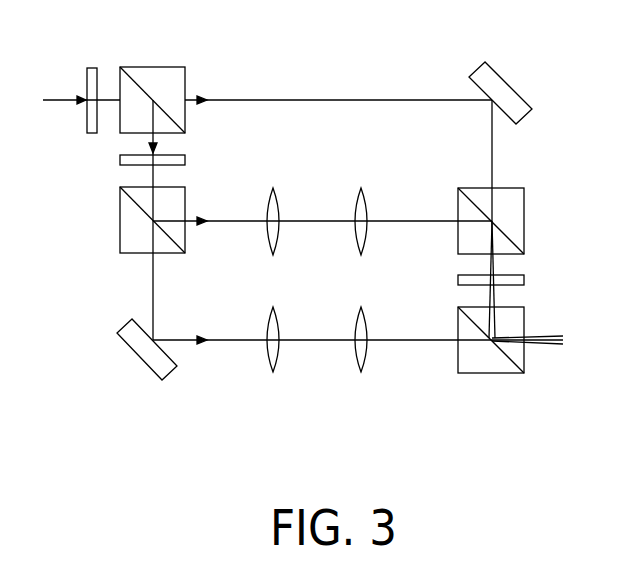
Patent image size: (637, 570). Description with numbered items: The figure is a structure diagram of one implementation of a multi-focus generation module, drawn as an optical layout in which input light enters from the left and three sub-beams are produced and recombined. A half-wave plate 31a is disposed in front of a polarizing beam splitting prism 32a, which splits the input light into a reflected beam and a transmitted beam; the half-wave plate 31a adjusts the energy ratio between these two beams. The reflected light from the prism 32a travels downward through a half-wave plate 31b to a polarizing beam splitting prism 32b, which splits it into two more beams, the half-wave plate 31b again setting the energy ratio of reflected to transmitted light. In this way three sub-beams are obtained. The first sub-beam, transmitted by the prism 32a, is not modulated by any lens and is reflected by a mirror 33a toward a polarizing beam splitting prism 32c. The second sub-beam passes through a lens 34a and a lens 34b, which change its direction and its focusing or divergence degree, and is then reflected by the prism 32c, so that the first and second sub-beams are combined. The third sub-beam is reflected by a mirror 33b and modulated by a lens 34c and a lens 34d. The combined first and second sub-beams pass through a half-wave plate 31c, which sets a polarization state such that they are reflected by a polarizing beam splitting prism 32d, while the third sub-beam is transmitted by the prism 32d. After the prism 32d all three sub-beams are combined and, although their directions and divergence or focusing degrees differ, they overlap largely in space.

The half-wave plate 31a is at (93, 67).
The half-wave plate 31b is at (120, 156).
The half-wave plate 31c is at (524, 283).
The polarizing beam splitting prism 32a is at (156, 67).
The polarizing beam splitting prism 32b is at (120, 220).
The polarizing beam splitting prism 32c is at (524, 227).
The polarizing beam splitting prism 32d is at (488, 373).
The mirror 33a is at (489, 63).
The mirror 33b is at (158, 378).
The lens 34a is at (273, 188).
The lens 34b is at (361, 188).
The lens 34c is at (273, 372).
The lens 34d is at (361, 372).